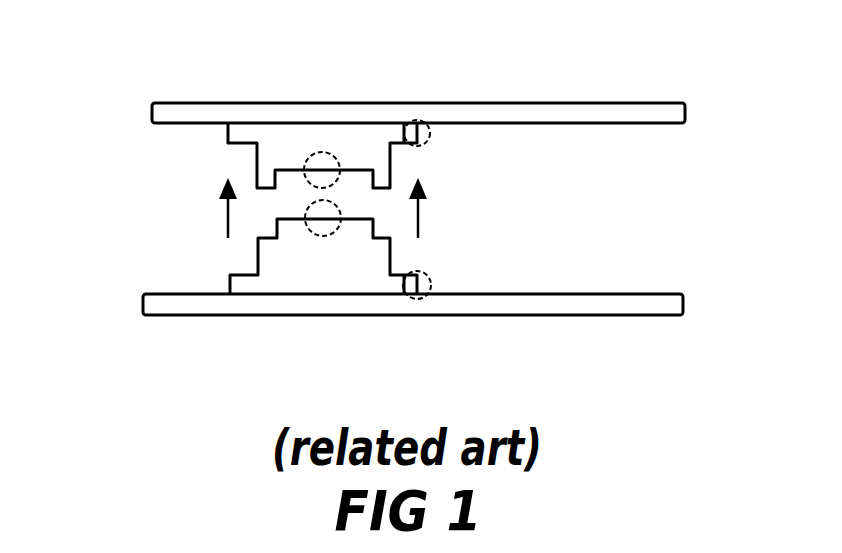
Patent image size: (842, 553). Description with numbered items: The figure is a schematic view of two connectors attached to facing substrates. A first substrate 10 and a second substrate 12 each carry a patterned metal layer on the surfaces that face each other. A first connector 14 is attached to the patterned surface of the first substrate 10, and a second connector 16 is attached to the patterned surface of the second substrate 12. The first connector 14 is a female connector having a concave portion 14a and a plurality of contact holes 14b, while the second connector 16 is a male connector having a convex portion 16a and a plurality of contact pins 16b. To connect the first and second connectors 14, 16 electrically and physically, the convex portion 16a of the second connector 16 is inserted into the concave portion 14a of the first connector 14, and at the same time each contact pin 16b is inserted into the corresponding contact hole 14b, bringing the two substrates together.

The first substrate 10 is at (615, 103).
The second substrate 12 is at (630, 317).
The first connector 14 is at (445, 152).
The concave portion 14a is at (303, 180).
The contact holes 14b is at (443, 125).
The second connector 16 is at (447, 257).
The convex portion 16a is at (307, 205).
The contact pins 16b is at (438, 289).